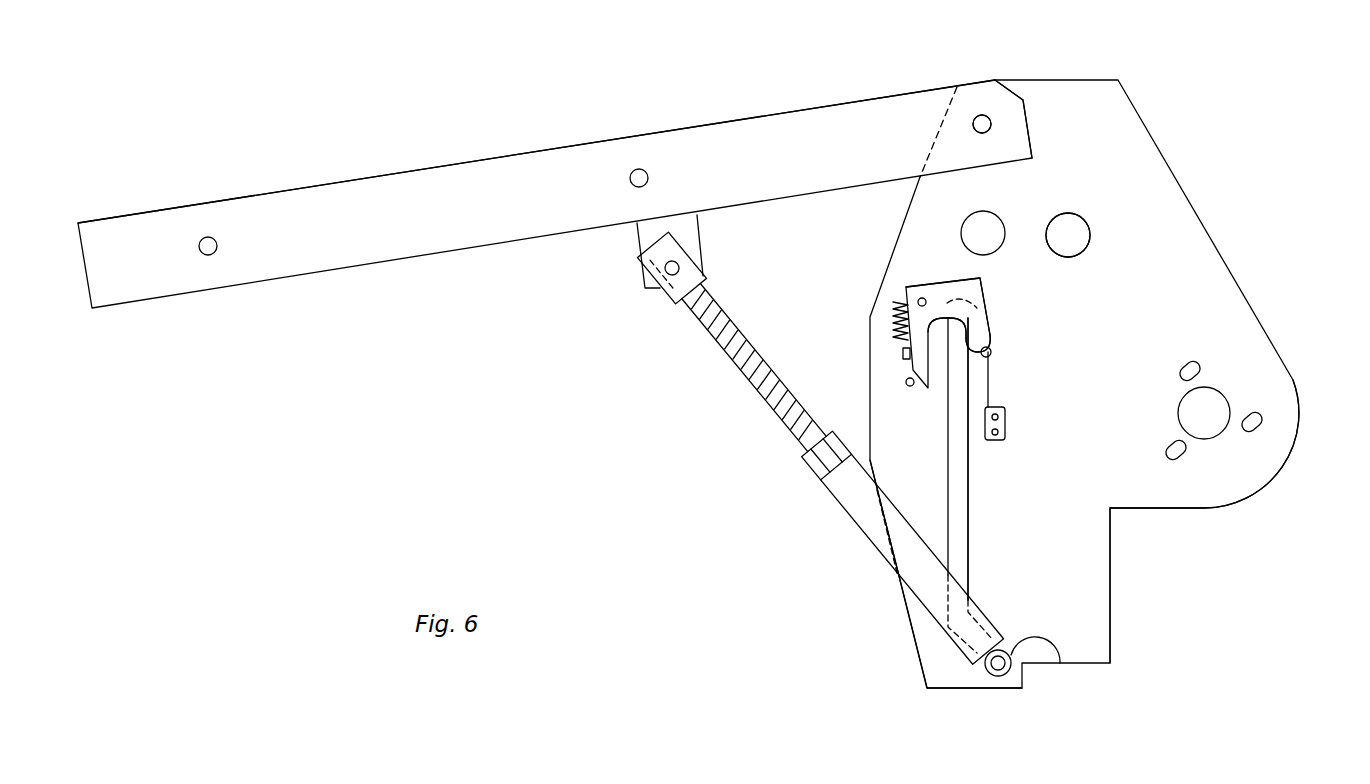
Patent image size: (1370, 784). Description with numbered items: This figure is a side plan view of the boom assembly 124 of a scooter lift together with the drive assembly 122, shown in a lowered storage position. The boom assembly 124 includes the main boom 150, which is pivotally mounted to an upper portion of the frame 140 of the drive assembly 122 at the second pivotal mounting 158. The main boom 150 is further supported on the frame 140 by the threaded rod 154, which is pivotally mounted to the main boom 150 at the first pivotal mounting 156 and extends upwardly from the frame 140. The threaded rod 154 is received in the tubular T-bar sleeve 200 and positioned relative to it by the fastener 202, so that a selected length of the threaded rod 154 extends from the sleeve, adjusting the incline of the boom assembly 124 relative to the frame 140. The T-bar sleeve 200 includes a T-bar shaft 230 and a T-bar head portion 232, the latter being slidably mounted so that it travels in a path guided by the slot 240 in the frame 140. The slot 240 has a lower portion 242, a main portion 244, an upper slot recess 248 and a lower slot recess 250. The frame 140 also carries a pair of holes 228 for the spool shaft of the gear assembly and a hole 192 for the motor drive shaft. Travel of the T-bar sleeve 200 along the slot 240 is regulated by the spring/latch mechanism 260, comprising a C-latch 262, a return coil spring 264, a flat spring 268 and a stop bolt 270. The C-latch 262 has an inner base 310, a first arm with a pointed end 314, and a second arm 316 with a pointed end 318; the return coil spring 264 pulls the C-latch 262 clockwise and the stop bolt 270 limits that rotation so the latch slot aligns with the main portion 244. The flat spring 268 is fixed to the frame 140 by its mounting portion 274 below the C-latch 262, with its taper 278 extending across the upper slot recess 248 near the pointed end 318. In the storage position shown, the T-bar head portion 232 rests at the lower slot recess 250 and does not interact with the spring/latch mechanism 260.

The drive assembly 122 is at (1264, 316).
The boom assembly 124 is at (518, 146).
The frame 140 is at (1163, 493).
The main boom 150 is at (355, 192).
The threaded rod 154 is at (734, 365).
The first pivotal mounting 156 is at (640, 270).
The second pivotal mounting 158 is at (976, 95).
The hole 192 is at (1227, 397).
The T-bar sleeve 200 is at (853, 503).
The fastener 202 is at (805, 466).
The holes 228 is at (1092, 236).
The T-bar shaft 230 is at (875, 547).
The T-bar head portion 232 is at (1050, 665).
The slot 240 is at (972, 475).
The lower portion 242 is at (955, 650).
The main portion 244 is at (968, 535).
The upper slot recess 248 is at (987, 313).
The lower slot recess 250 is at (1005, 680).
The spring/latch mechanism 260 is at (878, 290).
The C-latch 262 is at (920, 285).
The return coil spring 264 is at (890, 323).
The flat spring 268 is at (990, 395).
The stop bolt 270 is at (903, 355).
The mounting portion 274 is at (1003, 438).
The taper 278 is at (992, 343).
The inner base 310 is at (947, 283).
The pointed end 314 is at (907, 390).
The second arm 316 is at (990, 297).
The pointed end 318 is at (990, 356).